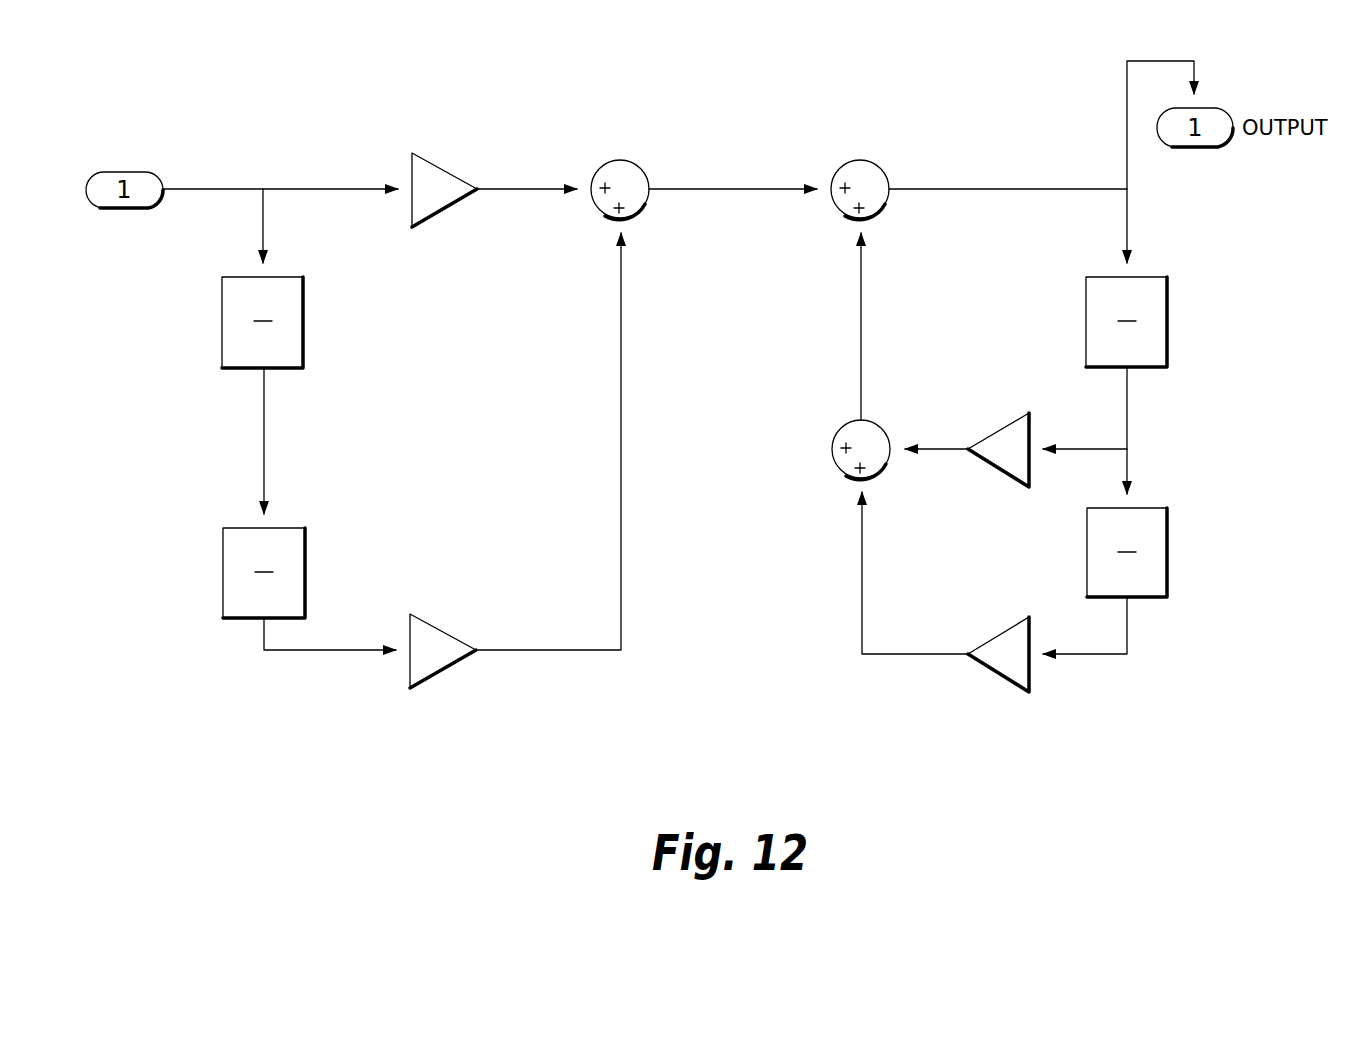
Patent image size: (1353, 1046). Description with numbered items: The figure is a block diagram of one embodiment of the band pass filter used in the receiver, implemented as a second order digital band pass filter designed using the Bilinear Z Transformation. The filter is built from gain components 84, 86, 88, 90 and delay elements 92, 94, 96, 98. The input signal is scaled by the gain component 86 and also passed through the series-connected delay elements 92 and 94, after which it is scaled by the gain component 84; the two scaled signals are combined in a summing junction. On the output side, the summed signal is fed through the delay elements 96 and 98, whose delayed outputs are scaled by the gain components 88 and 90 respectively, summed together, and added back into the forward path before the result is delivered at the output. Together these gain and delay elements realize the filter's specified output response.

The gain component 84 is at (437, 627).
The gain component 86 is at (433, 158).
The gain component 88 is at (995, 430).
The gain component 90 is at (995, 636).
The delay element 92 is at (303, 327).
The delay element 94 is at (305, 575).
The delay element 96 is at (1167, 327).
The delay element 98 is at (1167, 552).